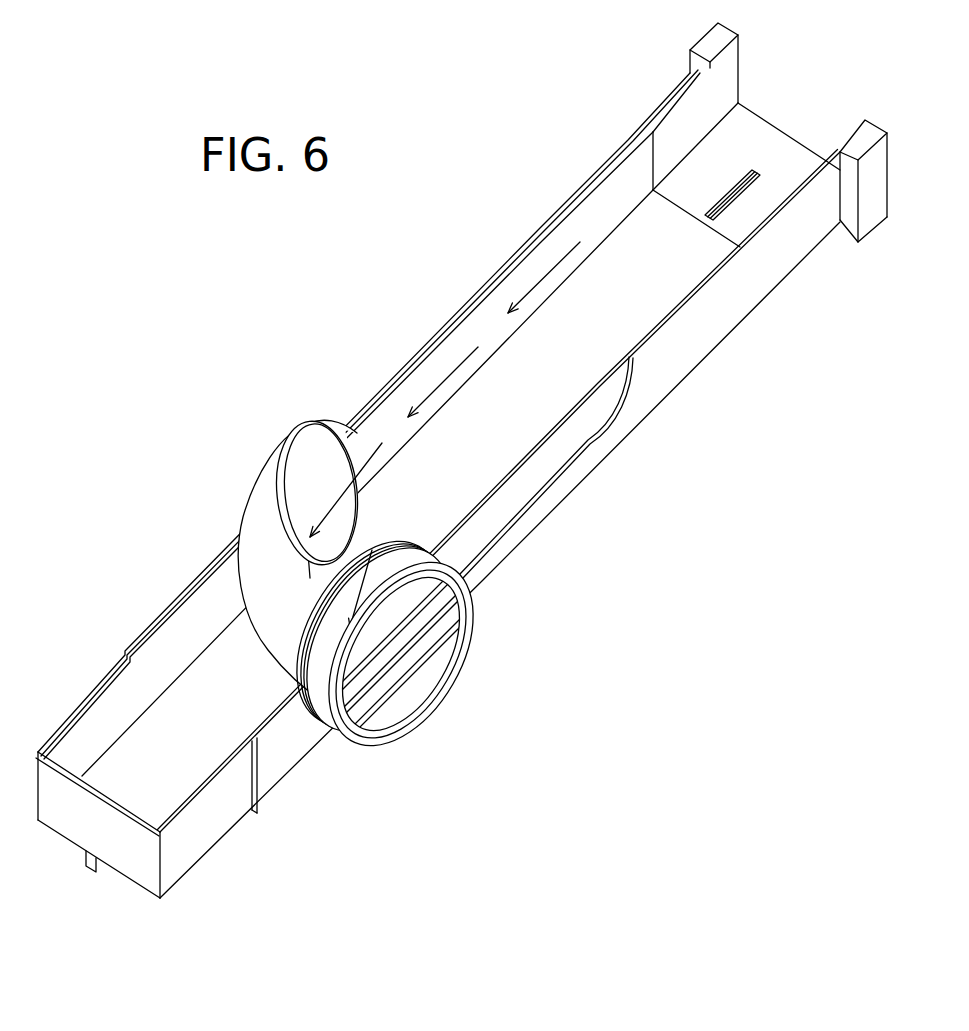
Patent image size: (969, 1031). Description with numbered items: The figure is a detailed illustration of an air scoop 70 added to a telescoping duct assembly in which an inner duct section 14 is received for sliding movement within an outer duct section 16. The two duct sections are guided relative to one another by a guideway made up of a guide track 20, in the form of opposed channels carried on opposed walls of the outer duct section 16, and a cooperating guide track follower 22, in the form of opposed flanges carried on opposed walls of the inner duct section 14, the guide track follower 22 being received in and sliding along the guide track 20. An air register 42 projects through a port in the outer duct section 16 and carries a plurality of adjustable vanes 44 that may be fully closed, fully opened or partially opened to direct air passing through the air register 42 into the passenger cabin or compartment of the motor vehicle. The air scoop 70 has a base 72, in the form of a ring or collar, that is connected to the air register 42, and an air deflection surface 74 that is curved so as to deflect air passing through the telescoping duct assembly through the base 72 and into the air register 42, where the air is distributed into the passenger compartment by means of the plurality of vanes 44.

The inner duct section 14 is at (195, 840).
The outer duct section 16 is at (683, 350).
The guide track 20 is at (753, 173).
The guide track follower 22 is at (98, 870).
The air register 42 is at (413, 728).
The adjustable vanes 44 is at (405, 653).
The air scoop 70 is at (253, 530).
The base 72 is at (388, 567).
The air deflection surface 74 is at (308, 463).